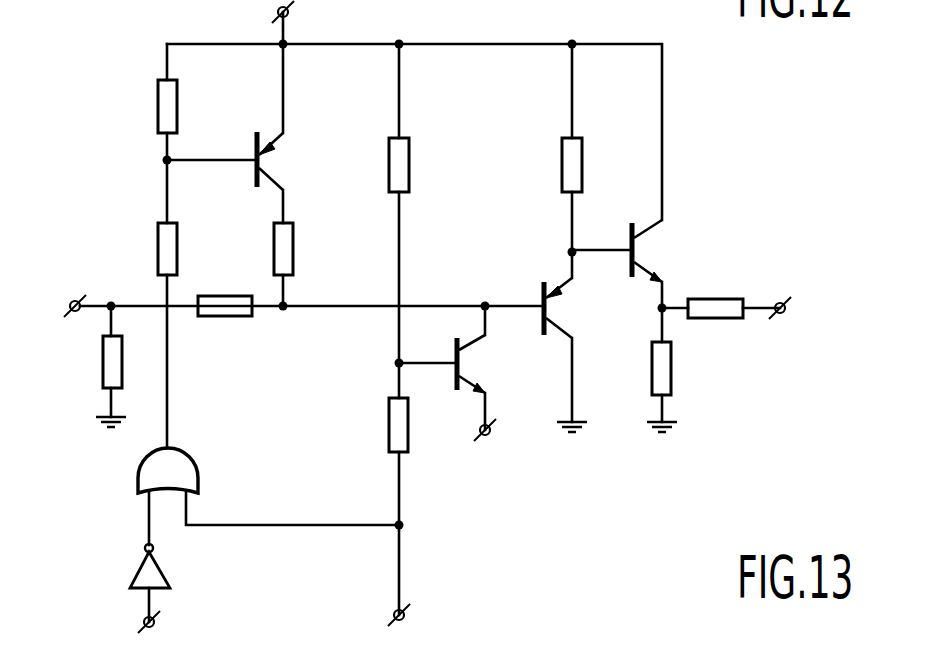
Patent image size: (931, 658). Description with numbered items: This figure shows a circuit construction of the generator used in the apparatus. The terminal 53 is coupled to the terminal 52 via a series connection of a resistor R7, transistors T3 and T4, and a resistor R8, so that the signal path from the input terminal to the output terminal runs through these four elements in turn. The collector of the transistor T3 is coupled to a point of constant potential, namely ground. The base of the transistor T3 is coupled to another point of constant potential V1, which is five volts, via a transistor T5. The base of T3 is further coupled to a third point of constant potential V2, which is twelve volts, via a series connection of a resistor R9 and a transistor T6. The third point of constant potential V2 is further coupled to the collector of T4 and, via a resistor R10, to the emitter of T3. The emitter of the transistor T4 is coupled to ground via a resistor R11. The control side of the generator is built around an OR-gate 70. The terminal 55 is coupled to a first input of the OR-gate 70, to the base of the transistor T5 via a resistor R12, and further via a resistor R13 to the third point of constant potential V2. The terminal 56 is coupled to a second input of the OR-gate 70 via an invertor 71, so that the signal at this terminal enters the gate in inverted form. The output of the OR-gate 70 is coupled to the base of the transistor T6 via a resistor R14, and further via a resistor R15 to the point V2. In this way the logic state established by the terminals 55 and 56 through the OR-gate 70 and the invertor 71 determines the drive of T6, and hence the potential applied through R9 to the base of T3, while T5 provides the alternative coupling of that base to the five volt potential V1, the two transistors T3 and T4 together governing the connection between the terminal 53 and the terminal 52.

The terminal 52 is at (813, 297).
The terminal 53 is at (74, 284).
The terminal 55 is at (425, 613).
The terminal 56 is at (188, 612).
The OR-gate 70 is at (217, 462).
The invertor 71 is at (188, 565).
The resistor R7 is at (228, 328).
The resistor R8 is at (726, 290).
The resistor R9 is at (300, 242).
The resistor R10 is at (592, 160).
The resistor R11 is at (680, 363).
The resistor R12 is at (393, 419).
The resistor R13 is at (420, 157).
The resistor R14 is at (185, 243).
The resistor R15 is at (185, 95).
The transistor T3 is at (582, 298).
The transistor T4 is at (672, 247).
The transistor T5 is at (493, 358).
The transistor T6 is at (302, 143).
The point of constant potential V1 is at (493, 451).
The third point of constant potential V2 is at (302, 16).